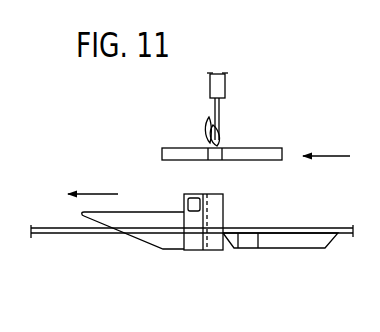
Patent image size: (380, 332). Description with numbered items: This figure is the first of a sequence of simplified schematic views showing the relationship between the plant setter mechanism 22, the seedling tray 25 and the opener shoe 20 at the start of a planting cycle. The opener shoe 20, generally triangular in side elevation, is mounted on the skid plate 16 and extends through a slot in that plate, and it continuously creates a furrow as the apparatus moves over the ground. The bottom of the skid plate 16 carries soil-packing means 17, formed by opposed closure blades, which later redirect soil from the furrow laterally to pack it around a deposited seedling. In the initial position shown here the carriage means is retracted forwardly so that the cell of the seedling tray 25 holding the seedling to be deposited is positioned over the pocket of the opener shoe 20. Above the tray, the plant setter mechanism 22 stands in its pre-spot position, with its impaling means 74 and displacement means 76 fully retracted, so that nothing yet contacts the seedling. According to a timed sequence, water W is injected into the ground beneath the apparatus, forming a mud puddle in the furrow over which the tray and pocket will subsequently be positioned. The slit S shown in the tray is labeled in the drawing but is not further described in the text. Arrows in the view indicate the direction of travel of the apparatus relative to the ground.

The plant setter mechanism 22 is at (234, 85).
The displacement means 76 is at (221, 120).
The impaling means 74 is at (217, 141).
The seedling tray 25 is at (259, 143).
The slit S is at (215, 160).
The skid plate 16 is at (320, 228).
The soil-packing means 17 is at (294, 259).
The opener shoe 20 is at (132, 248).
The water W is at (195, 249).